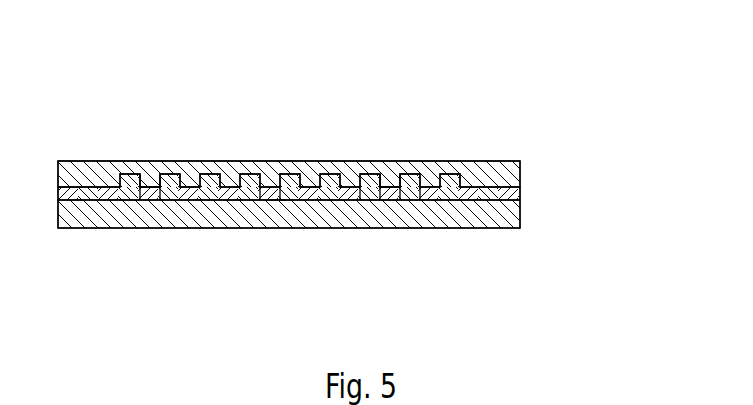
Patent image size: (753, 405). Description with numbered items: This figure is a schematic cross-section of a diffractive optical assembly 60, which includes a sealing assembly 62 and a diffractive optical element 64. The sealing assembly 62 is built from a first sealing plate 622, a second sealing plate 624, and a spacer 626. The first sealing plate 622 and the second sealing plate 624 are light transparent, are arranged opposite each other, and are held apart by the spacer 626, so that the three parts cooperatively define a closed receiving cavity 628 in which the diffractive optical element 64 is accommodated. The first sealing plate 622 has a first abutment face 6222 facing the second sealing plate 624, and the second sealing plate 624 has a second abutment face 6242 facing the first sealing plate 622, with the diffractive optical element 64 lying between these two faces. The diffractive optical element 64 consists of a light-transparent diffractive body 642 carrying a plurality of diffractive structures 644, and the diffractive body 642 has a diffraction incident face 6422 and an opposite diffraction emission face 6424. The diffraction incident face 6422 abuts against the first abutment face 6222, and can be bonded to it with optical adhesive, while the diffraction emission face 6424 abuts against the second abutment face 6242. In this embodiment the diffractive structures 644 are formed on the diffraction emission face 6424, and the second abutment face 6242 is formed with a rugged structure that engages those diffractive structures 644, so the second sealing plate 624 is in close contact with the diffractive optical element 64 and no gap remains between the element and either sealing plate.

The diffractive optical assembly 60 is at (88, 85).
The sealing assembly 62 is at (360, 191).
The first sealing plate 622 is at (520, 214).
The second sealing plate 624 is at (520, 165).
The spacer 626 is at (520, 191).
The receiving cavity 628 is at (387, 174).
The second abutment face 6242 is at (148, 174).
The first abutment face 6222 is at (278, 218).
The diffractive optical element 64 is at (282, 224).
The diffractive body 642 is at (412, 193).
The diffractive structures 644 is at (364, 192).
The diffraction incident face 6422 is at (270, 184).
The diffraction emission face 6424 is at (145, 202).